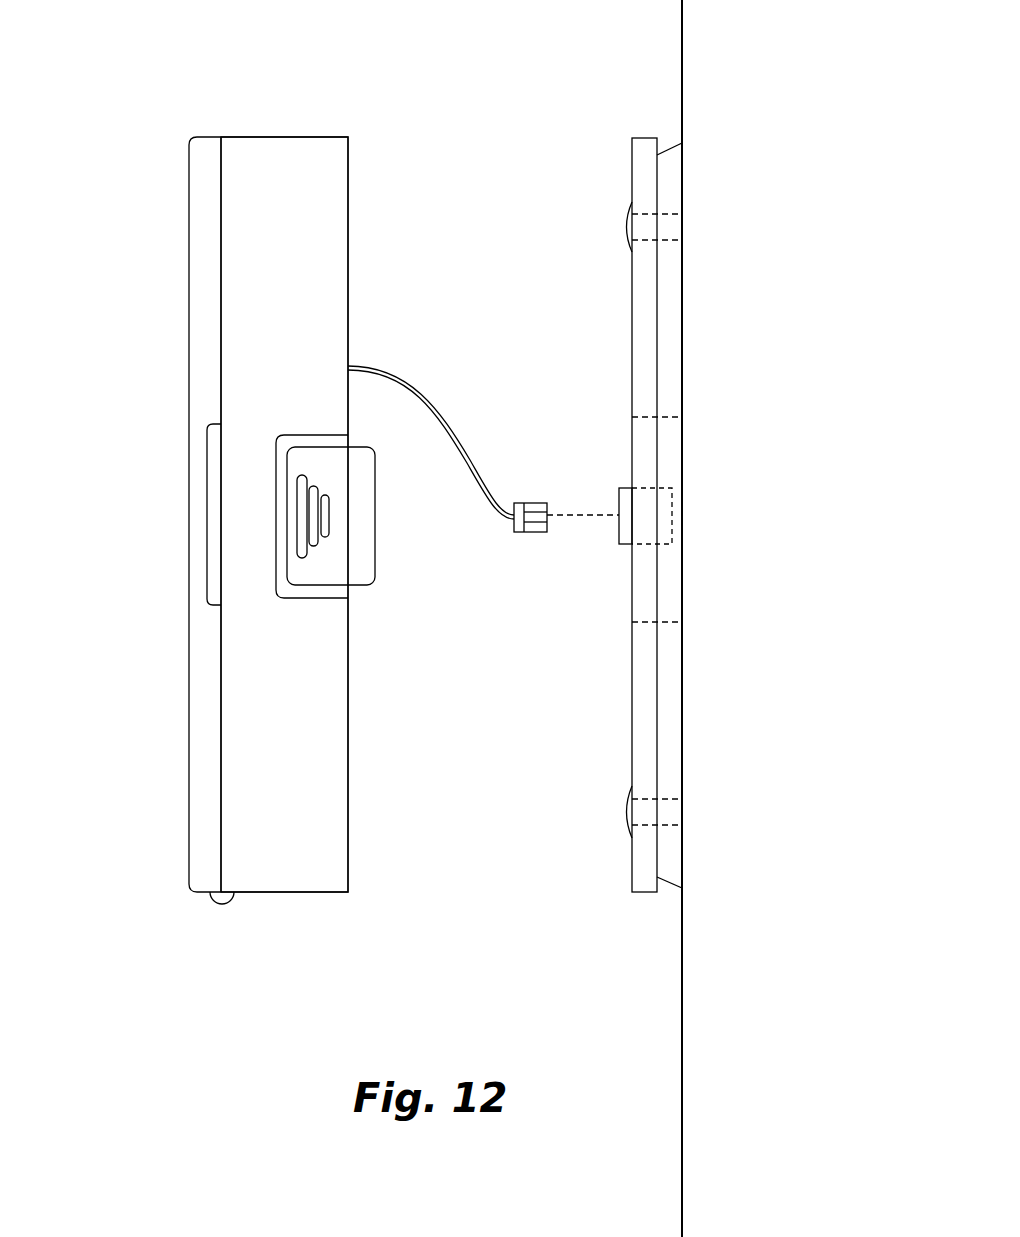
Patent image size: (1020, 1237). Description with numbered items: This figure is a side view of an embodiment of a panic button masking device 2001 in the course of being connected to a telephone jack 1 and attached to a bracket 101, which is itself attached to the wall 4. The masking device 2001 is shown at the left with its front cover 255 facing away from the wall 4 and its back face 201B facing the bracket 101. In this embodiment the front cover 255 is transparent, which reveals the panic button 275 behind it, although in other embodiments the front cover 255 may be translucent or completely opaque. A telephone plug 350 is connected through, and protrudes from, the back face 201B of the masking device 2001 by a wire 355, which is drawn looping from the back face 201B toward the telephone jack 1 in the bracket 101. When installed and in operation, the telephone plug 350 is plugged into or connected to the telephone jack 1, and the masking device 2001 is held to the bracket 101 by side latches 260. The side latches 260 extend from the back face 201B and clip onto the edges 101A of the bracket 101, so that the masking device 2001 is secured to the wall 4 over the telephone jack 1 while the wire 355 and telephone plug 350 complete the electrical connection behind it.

The wall 4 is at (718, 618).
The bracket 101 is at (557, 165).
The edges of the bracket 101A is at (632, 528).
The telephone jack 1 is at (619, 497).
The masking device 2001 is at (277, 586).
The front cover 255 is at (188, 287).
The back face 201B is at (348, 197).
The panic button 275 is at (207, 505).
The side latches 260 is at (375, 582).
The wire 355 is at (443, 418).
The telephone plug 350 is at (523, 535).